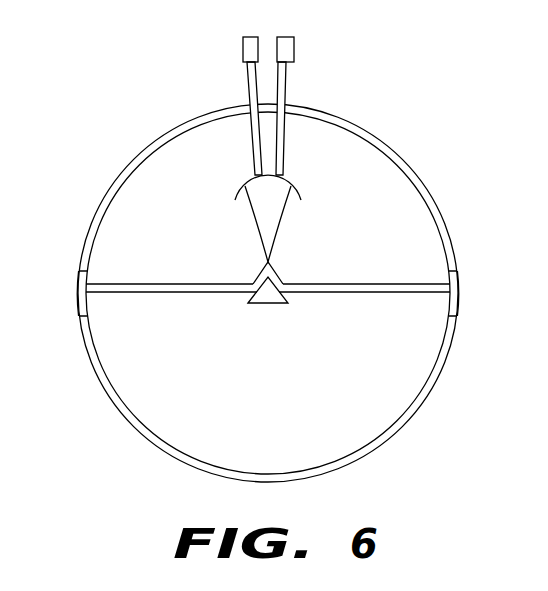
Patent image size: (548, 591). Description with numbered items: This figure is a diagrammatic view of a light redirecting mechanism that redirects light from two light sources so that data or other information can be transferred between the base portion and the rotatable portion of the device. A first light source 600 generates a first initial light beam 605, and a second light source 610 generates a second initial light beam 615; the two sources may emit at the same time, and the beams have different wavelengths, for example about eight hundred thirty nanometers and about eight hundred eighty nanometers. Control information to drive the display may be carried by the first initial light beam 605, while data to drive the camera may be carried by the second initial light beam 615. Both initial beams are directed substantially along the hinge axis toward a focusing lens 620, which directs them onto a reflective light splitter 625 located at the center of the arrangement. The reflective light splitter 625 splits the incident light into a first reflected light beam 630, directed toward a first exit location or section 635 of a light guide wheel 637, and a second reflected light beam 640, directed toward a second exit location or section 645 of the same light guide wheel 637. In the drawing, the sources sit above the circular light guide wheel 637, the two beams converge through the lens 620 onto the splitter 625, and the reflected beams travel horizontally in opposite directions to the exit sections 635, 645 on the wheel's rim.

The first light source 600 is at (250, 37).
The second light source 610 is at (285, 37).
The first initial light beam 605 is at (249, 86).
The second initial light beam 615 is at (286, 86).
The focusing lens 620 is at (248, 182).
The reflective light splitter 625 is at (272, 305).
The first reflected light beam 630 is at (133, 293).
The second reflected light beam 640 is at (395, 285).
The first exit section 635 is at (78, 291).
The second exit section 645 is at (458, 291).
The light guide wheel 637 is at (430, 390).